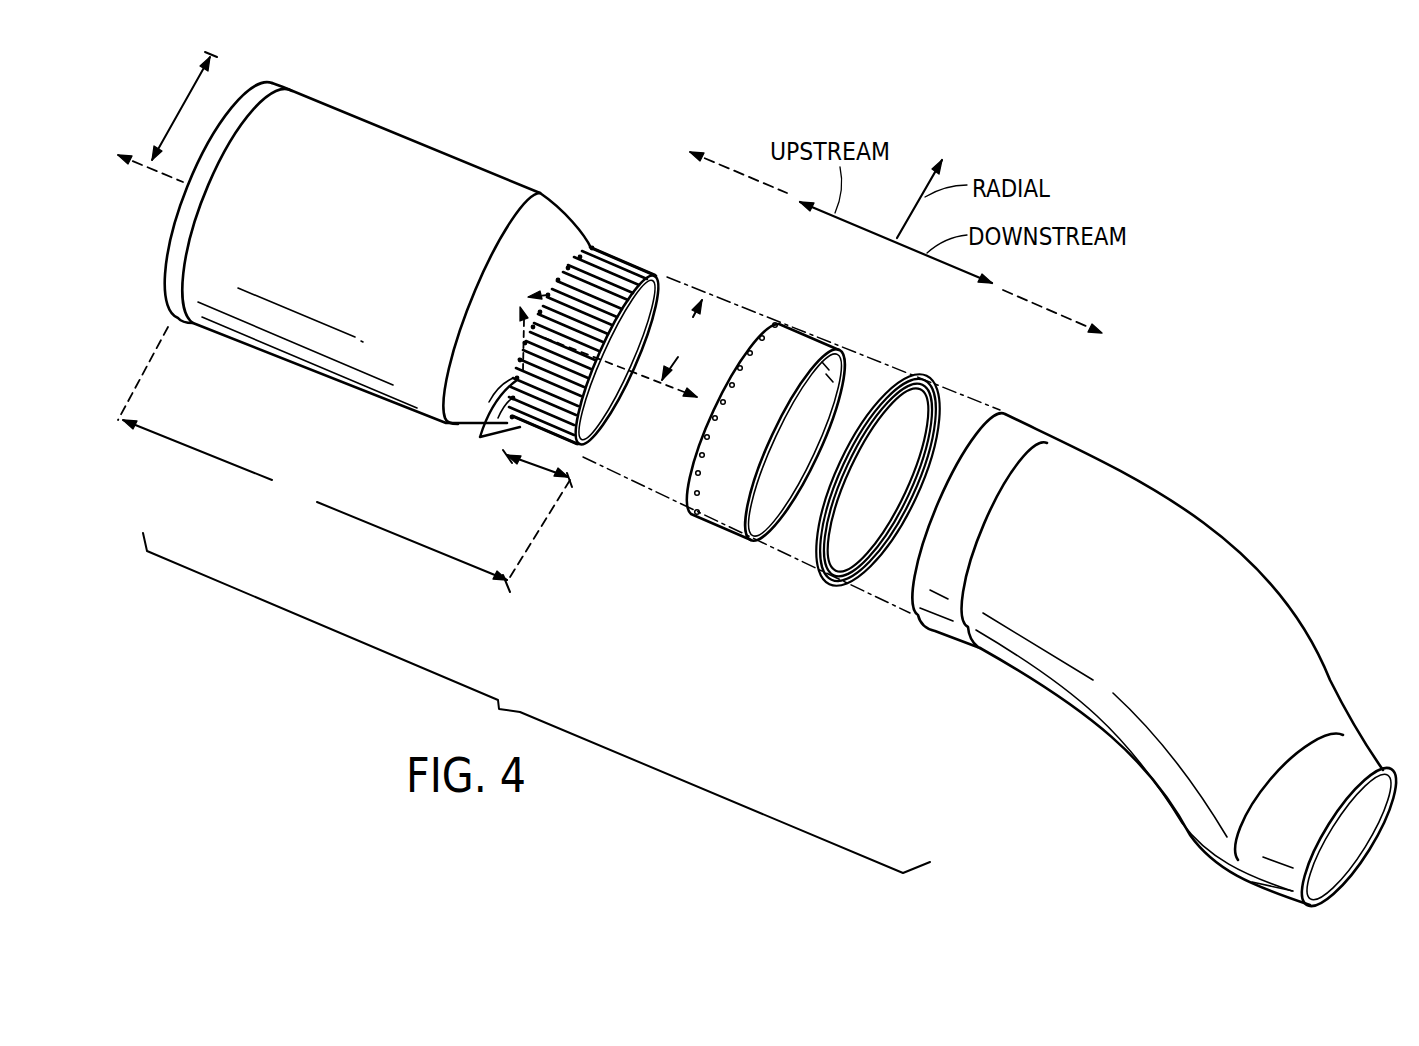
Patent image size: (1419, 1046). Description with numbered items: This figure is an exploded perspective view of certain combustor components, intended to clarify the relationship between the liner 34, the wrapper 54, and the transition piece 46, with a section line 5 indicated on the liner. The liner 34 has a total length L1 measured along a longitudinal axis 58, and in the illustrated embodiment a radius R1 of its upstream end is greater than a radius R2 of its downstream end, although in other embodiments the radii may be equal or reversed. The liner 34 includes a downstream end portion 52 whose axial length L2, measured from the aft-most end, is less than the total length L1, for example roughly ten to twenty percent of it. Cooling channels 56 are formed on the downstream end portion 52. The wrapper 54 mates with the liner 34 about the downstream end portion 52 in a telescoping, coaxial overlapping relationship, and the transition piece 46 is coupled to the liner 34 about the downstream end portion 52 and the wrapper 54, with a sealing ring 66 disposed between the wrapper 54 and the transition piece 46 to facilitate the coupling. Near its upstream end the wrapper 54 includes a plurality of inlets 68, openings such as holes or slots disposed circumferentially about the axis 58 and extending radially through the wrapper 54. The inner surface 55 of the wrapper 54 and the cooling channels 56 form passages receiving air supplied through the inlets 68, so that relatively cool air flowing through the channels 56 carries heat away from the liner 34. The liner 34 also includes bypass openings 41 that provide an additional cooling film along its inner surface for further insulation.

The liner 34 is at (407, 136).
The bypass openings 41 is at (481, 438).
The transition piece 46 is at (1073, 443).
The downstream end portion 52 is at (630, 247).
The wrapper 54 is at (798, 340).
The inner surface 55 is at (812, 395).
The cooling channels 56 is at (622, 290).
The longitudinal axis 58 is at (1040, 303).
The sealing ring 66 is at (927, 372).
The inlets 68 is at (698, 477).
The section line 5- 5 is at (525, 316).
The radius of the upstream end of the liner R1 is at (178, 112).
The radius of the downstream end of the liner R2 is at (626, 348).
The length of the liner L1 is at (344, 459).
The axial length of the downstream end portion L2 is at (528, 470).